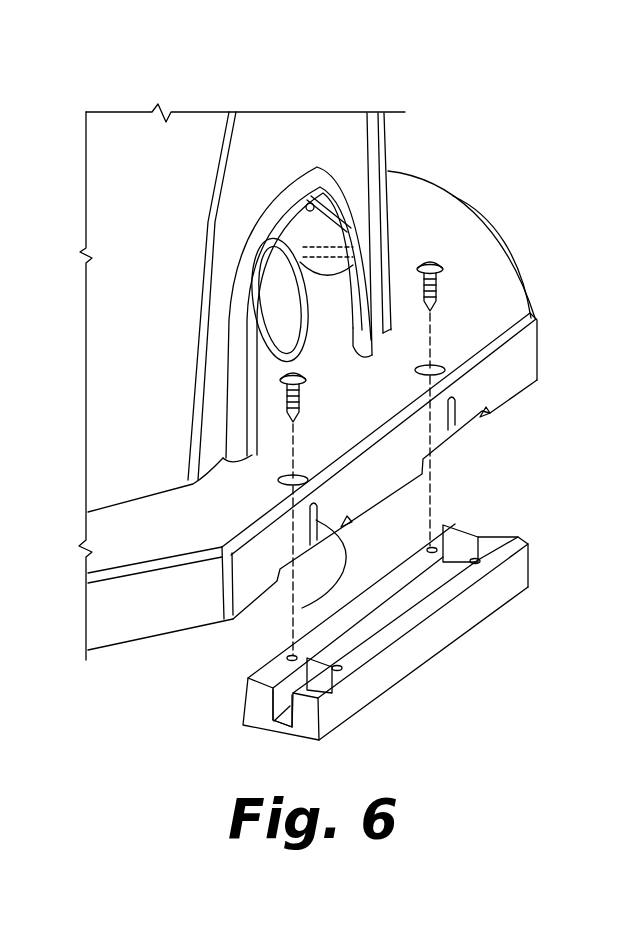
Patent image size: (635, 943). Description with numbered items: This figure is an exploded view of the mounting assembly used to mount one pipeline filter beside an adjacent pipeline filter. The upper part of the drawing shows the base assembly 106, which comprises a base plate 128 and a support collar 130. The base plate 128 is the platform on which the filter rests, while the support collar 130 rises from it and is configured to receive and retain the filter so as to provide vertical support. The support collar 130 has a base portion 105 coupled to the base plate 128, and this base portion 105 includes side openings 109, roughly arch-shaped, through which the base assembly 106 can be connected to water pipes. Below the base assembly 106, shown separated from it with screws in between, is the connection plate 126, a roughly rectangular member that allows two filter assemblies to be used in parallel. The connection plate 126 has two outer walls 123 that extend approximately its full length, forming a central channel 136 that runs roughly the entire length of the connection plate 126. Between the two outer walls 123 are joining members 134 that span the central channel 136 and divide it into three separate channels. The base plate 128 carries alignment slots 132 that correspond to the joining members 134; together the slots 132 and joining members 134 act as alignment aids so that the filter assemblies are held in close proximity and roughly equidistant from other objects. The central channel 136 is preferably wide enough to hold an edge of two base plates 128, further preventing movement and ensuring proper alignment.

The base portion 105 is at (168, 462).
The base assembly 106 is at (205, 88).
The side openings 109 is at (333, 300).
The outer walls 123 is at (386, 603).
The connection plate 126 is at (447, 615).
The base plate 128 is at (467, 250).
The support collar 130 is at (120, 318).
The alignment slots 132 is at (455, 412).
The joining members 134 is at (460, 552).
The central channel 136 is at (268, 708).